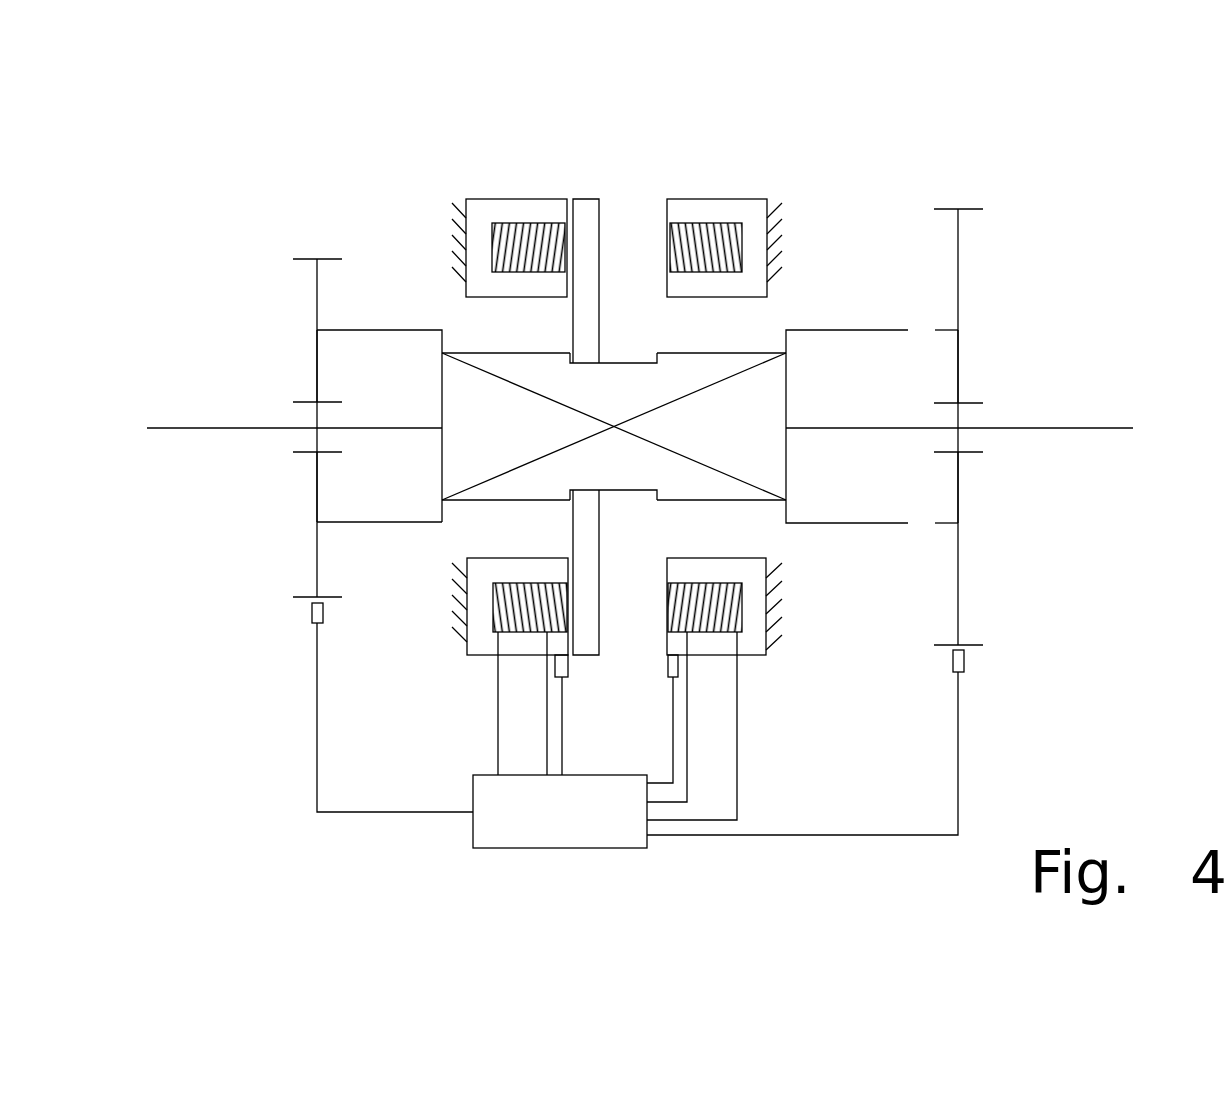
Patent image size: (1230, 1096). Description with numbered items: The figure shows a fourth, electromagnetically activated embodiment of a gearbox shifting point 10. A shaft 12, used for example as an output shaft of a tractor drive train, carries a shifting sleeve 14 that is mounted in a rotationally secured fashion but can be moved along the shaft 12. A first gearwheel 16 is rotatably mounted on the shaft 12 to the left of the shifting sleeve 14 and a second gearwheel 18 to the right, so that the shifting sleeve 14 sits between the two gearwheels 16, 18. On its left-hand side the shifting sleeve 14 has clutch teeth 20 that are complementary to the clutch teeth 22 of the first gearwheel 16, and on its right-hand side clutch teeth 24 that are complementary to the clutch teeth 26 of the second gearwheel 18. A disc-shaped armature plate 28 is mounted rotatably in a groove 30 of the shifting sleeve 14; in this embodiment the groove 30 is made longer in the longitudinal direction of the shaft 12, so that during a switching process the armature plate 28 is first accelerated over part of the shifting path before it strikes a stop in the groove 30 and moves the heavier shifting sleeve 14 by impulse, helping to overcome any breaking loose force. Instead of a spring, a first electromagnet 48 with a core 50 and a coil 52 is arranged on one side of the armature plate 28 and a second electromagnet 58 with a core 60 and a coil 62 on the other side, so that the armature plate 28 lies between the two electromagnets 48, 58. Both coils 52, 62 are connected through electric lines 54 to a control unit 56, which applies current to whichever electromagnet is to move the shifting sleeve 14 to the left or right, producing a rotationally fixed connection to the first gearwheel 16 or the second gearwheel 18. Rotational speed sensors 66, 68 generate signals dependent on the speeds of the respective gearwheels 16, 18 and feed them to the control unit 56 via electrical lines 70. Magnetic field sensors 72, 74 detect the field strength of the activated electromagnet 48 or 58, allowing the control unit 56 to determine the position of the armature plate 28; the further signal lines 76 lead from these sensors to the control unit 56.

The gearbox shifting point 10 is at (925, 128).
The shaft 12 is at (1085, 427).
The shifting sleeve 14 is at (747, 452).
The first gearwheel 16 is at (317, 298).
The second gearwheel 18 is at (960, 248).
The clutch teeth 20 is at (395, 330).
The clutch teeth 22 is at (330, 522).
The clutch teeth 24 is at (838, 330).
The clutch teeth 26 is at (945, 330).
The armature plate 28 is at (598, 208).
The groove 30 is at (612, 350).
The electromagnet 48 is at (510, 171).
The core 50 is at (480, 198).
The coil 52 is at (533, 225).
The electric lines 54 is at (737, 757).
The control unit 56 is at (590, 828).
The second electromagnet 58 is at (746, 178).
The core 60 is at (752, 205).
The coil 62 is at (767, 595).
The rotational speed sensor 66 is at (312, 612).
The rotational speed sensor 68 is at (964, 660).
The electrical lines 70 is at (317, 778).
The magnetic field sensor 72 is at (555, 668).
The magnetic field sensor 74 is at (668, 668).
The position sensor signal lines 76 is at (673, 727).